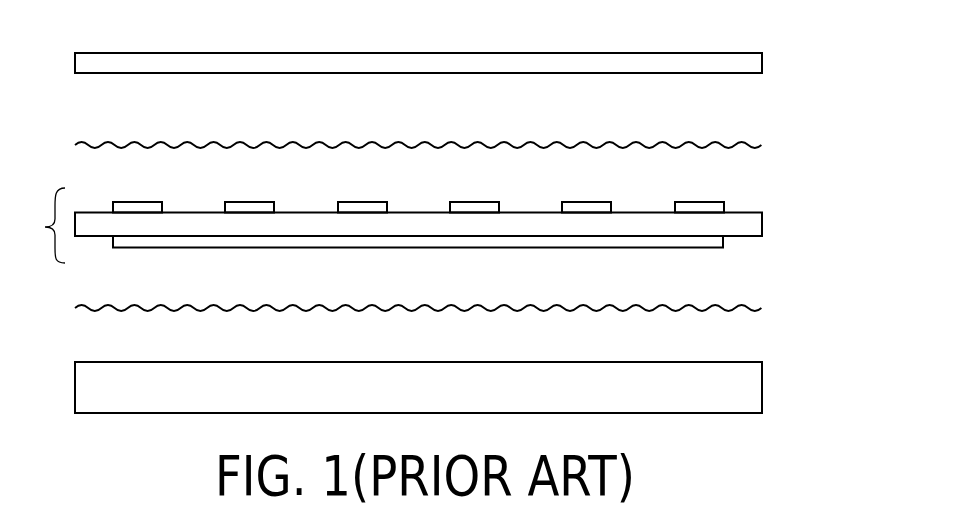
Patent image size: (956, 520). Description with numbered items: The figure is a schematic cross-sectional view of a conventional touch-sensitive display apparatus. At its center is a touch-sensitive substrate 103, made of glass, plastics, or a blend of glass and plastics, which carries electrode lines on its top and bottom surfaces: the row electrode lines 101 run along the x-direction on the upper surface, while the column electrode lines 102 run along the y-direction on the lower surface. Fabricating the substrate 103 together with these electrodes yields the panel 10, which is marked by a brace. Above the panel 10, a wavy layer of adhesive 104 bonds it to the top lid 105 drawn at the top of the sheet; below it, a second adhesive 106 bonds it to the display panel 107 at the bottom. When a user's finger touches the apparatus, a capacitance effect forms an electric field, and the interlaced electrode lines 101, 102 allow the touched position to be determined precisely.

The panel 10 is at (41, 225).
The row electrode lines 101 is at (710, 203).
The column electrode lines 102 is at (708, 242).
The touch-sensitive substrate 103 is at (762, 234).
The adhesive 104 is at (727, 145).
The top lid 105 is at (742, 62).
The adhesive 106 is at (742, 308).
The display panel 107 is at (751, 394).